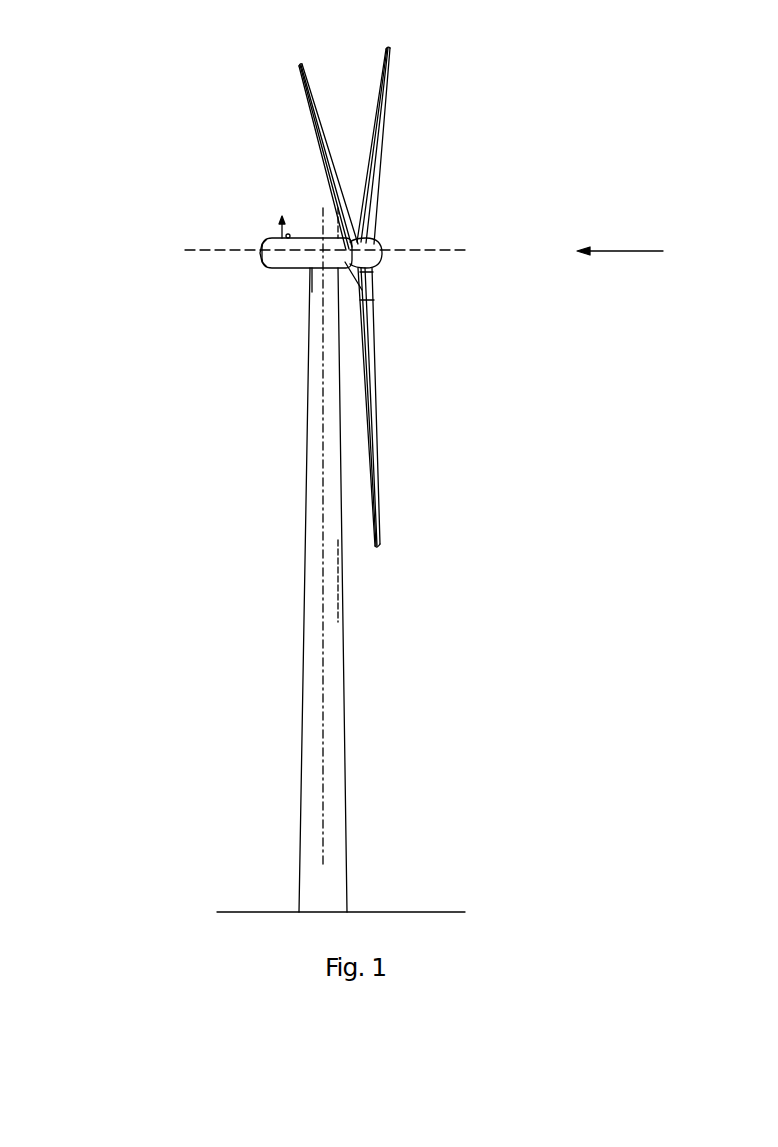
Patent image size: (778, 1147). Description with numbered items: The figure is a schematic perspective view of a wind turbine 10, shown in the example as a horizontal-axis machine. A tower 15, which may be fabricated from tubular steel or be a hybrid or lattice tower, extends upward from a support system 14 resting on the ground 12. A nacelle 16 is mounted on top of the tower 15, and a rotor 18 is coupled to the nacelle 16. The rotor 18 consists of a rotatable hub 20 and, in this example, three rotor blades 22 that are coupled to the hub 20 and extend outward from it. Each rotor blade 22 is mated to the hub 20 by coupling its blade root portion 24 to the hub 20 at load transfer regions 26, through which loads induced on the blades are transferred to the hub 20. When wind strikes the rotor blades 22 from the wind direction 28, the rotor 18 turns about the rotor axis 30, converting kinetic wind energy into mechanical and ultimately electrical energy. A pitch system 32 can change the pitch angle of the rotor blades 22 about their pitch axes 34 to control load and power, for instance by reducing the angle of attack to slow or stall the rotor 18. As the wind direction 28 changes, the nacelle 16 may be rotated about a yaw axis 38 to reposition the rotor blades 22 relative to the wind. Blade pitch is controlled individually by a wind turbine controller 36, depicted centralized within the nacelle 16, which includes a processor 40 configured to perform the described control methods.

The wind turbine 10 is at (120, 72).
The ground 12 is at (237, 912).
The support system 14 is at (292, 912).
The tower 15 is at (310, 568).
The nacelle 16 is at (290, 268).
The rotor 18 is at (400, 167).
The hub 20 is at (380, 243).
The rotor blade 22 is at (320, 128).
The blade root portion 24 is at (378, 333).
The load transfer region 26 is at (367, 270).
The wind direction 28 is at (636, 250).
The rotor axis 30 is at (443, 251).
The pitch system 32 is at (363, 291).
The pitch axis 34 is at (300, 68).
The wind turbine controller 36 is at (312, 294).
The yaw axis 38 is at (340, 627).
The processor 40 is at (327, 200).